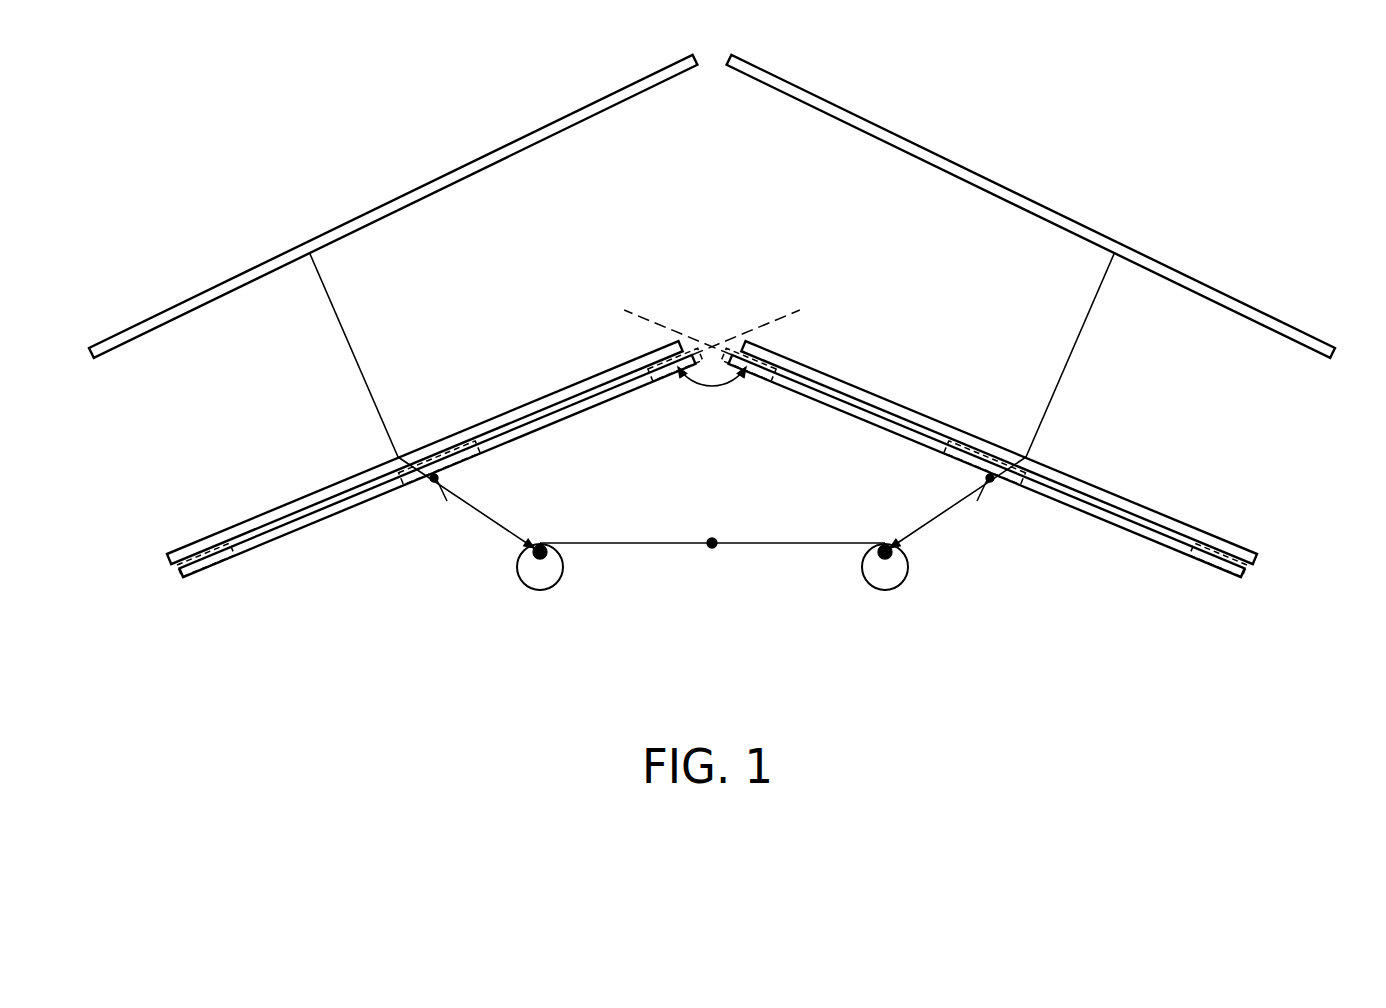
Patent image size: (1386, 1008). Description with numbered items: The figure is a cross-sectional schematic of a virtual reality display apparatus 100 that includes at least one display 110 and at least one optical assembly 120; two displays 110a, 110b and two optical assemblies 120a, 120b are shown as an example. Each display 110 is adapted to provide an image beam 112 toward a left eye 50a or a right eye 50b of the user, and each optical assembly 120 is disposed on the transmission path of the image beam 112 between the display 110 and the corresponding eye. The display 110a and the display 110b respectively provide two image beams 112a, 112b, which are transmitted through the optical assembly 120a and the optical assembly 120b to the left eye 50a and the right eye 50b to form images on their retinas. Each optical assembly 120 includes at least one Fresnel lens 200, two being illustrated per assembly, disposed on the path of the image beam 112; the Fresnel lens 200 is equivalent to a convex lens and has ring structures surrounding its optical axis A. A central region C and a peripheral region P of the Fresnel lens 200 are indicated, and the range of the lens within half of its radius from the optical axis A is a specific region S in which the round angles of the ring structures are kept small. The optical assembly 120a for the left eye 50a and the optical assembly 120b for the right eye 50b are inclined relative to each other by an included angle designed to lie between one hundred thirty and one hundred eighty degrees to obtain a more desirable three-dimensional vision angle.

The virtual reality display apparatus 100 is at (1265, 708).
The display 110 is at (712, 206).
The display 110a is at (523, 138).
The display 110b is at (901, 138).
The image beam 112 is at (712, 355).
The image beam 112a is at (371, 392).
The image beam 112b is at (1054, 392).
The optical assembly 120 is at (712, 488).
The optical assembly 120a is at (413, 623).
The optical assembly 120b is at (1123, 623).
The Fresnel lens 200 is at (283, 508).
The left eye 50a is at (540, 590).
The right eye 50b is at (885, 590).
The optical axis A is at (420, 431).
The peripheral region P is at (205, 578).
The central region C is at (421, 487).
The specific region S is at (1087, 488).